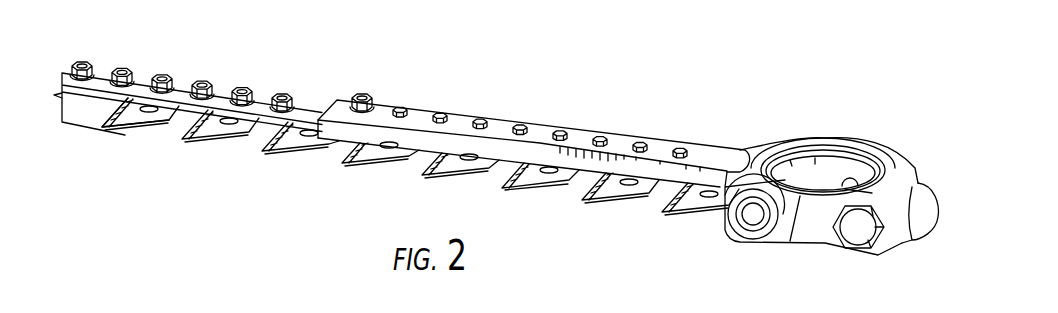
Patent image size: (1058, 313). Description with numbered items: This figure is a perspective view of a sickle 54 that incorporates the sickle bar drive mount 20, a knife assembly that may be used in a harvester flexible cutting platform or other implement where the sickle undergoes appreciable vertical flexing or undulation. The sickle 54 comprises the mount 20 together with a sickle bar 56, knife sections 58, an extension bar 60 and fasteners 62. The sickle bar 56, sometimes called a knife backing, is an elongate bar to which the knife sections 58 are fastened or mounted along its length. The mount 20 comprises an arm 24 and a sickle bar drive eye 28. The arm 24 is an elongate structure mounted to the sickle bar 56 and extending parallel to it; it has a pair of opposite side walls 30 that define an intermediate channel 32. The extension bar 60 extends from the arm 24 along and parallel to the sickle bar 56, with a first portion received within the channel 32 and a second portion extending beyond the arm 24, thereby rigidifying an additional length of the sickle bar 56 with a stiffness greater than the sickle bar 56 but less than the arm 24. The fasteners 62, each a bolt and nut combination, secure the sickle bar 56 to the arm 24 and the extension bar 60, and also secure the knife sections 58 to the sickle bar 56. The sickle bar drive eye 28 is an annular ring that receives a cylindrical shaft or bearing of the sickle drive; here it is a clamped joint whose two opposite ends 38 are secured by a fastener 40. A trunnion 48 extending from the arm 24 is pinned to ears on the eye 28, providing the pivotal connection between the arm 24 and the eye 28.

The sickle bar drive mount 20 is at (627, 127).
The arm 24 is at (430, 100).
The sickle bar drive eye 28 is at (817, 148).
The side walls 30 is at (470, 110).
The intermediate channel 32 is at (547, 128).
The opposite ends 38 is at (917, 190).
The fastener 40 is at (855, 243).
The trunnion 48 is at (800, 147).
The sickle 54 is at (543, 73).
The sickle bar 56 is at (256, 145).
The knife sections 58 is at (151, 130).
The extension bar 60 is at (184, 95).
The fasteners 62 is at (243, 88).